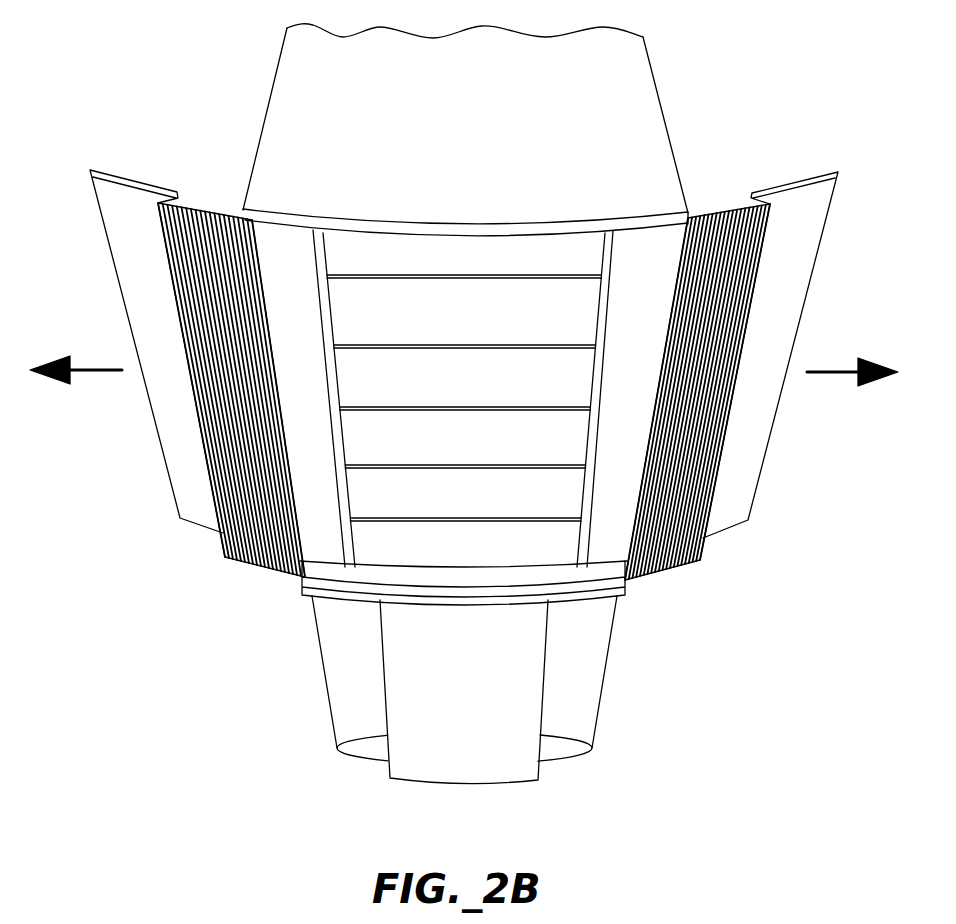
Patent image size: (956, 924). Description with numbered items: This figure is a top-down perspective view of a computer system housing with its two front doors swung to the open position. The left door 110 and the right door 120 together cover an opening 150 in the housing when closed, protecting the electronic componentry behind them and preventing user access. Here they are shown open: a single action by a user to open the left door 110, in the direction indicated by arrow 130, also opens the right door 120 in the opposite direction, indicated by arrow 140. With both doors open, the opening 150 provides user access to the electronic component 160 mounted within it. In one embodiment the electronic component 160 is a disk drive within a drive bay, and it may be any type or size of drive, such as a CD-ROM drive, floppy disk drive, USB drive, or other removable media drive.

The left door 110 is at (178, 467).
The right door 120 is at (748, 468).
The arrow 130 is at (102, 365).
The arrow 140 is at (827, 370).
The opening 150 is at (582, 243).
The electronic component 160 is at (347, 240).